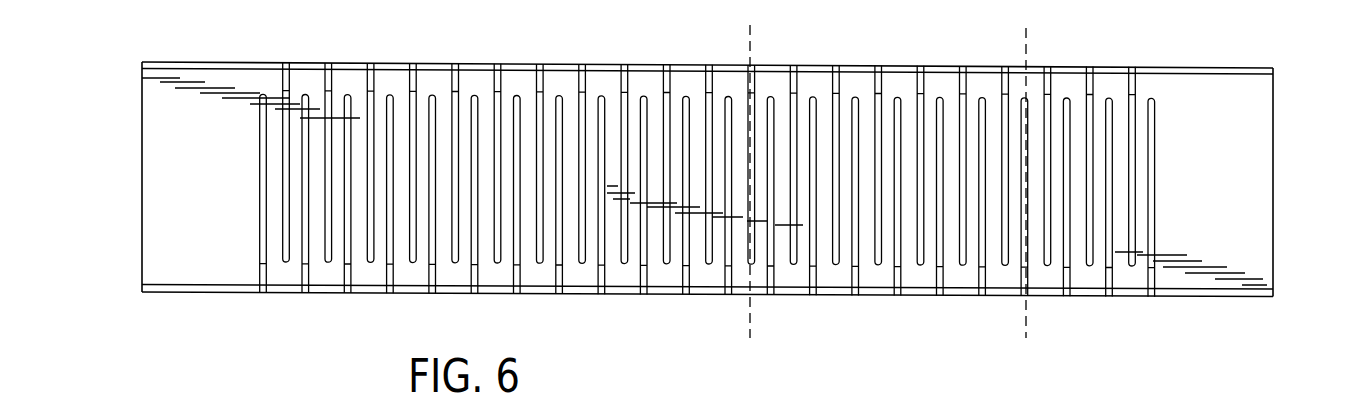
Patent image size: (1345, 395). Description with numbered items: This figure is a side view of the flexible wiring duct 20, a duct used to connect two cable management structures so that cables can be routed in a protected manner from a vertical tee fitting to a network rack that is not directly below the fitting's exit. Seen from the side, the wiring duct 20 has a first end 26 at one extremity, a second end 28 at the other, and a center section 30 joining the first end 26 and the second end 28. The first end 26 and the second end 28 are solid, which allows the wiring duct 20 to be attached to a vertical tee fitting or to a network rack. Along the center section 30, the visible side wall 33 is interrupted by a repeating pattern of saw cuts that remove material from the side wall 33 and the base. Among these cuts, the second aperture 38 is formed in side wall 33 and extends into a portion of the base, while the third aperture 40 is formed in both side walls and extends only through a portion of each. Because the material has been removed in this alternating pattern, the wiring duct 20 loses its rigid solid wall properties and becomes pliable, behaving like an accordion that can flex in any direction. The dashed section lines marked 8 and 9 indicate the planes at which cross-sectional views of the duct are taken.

The wiring duct 20 is at (468, 45).
The first end 26 is at (1215, 152).
The second end 28 is at (185, 185).
The center section 30 is at (585, 295).
The side wall 33 is at (554, 80).
The second aperture 38 is at (647, 100).
The third aperture 40 is at (709, 89).
The section line 8- 8 is at (805, 338).
The section line 9- 9 is at (1078, 338).